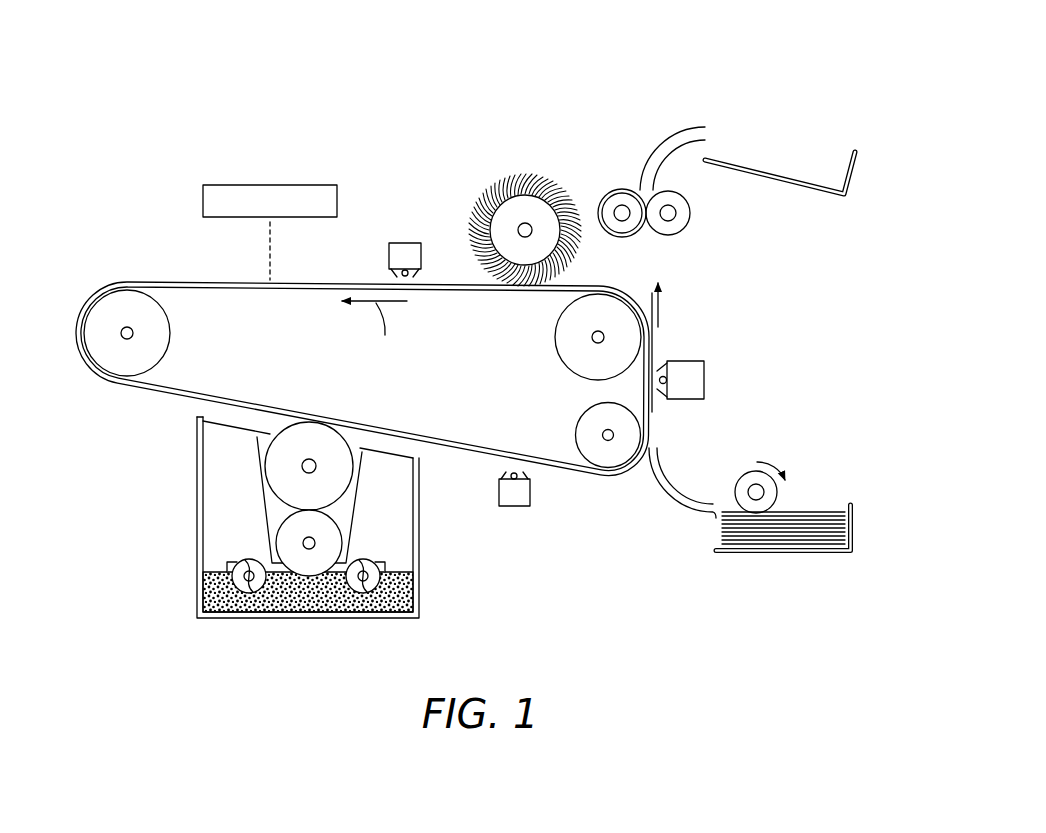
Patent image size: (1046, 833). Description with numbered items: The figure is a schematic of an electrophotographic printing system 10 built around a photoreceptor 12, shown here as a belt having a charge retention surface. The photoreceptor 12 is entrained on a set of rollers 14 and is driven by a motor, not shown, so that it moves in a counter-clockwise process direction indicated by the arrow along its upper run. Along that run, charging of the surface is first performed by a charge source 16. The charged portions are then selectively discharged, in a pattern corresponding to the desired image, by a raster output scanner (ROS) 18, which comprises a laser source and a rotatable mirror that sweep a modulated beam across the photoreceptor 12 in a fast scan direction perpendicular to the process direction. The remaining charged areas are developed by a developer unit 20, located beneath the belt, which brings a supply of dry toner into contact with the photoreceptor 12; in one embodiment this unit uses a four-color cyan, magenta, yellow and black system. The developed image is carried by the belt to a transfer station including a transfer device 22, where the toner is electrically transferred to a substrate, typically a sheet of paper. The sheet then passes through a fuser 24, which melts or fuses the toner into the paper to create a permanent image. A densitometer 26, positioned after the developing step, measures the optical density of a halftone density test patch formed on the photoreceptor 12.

The electrophotographic printing system 10 is at (464, 82).
The photoreceptor 12 is at (160, 281).
The rollers 14 is at (170, 333).
The charge source 16 is at (412, 234).
The raster output scanner (ROS) 18 is at (325, 185).
The developer unit 20 is at (439, 631).
The transfer device 22 is at (734, 371).
The fuser 24 is at (606, 169).
The densitometer 26 is at (514, 508).